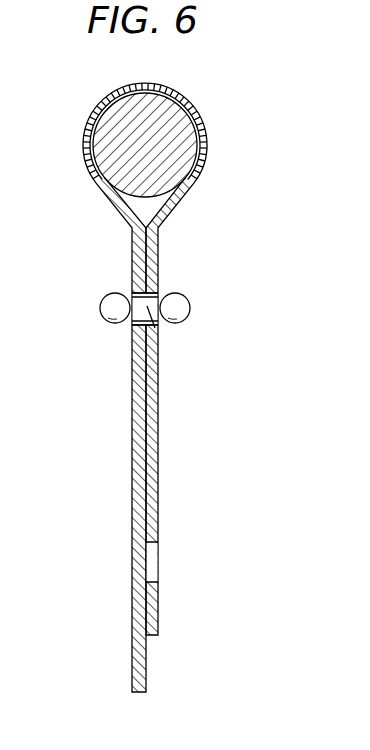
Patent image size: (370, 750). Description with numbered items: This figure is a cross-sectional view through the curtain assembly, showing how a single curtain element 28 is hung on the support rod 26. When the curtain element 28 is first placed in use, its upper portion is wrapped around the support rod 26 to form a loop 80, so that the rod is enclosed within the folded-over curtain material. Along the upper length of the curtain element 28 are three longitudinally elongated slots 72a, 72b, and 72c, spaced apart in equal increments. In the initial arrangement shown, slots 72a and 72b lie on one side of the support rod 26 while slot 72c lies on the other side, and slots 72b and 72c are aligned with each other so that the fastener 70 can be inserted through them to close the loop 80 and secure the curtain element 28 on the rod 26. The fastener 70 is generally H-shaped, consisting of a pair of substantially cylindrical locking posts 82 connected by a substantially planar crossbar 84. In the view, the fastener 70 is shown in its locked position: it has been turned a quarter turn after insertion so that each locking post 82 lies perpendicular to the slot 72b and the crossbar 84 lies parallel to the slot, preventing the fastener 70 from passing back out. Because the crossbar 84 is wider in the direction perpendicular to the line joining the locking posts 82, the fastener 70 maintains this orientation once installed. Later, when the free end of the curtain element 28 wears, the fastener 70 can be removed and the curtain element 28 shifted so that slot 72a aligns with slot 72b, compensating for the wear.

The support rod 26 is at (103, 130).
The curtain element 28 is at (132, 492).
The fastener 70 is at (105, 294).
The slot 72a is at (153, 557).
The slot 72b is at (163, 292).
The slot 72c is at (131, 325).
The loop 80 is at (205, 145).
The locking posts 82 is at (100, 309).
The crossbar 84 is at (147, 306).